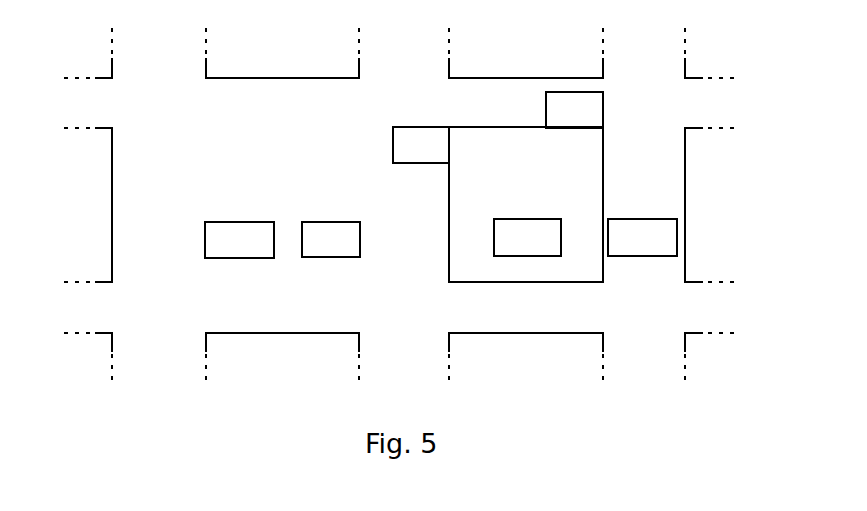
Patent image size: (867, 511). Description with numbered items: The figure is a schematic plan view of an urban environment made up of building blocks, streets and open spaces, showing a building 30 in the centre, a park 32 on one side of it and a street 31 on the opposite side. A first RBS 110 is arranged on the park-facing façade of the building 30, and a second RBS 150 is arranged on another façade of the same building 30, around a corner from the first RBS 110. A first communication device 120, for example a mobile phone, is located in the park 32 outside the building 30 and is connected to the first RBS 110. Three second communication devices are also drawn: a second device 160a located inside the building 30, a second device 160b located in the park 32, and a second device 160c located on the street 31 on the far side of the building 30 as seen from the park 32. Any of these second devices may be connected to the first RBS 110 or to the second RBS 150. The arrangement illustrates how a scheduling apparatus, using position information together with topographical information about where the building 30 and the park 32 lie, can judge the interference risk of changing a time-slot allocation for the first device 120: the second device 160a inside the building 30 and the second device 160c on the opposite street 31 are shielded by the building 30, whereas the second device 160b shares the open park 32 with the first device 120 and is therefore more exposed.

The building 30 is at (486, 159).
The street 31 is at (657, 154).
The park 32 is at (268, 152).
The first RBS 110 is at (442, 159).
The first communication device 120 is at (353, 252).
The second RBS 150 is at (596, 122).
The second device 160a is at (556, 250).
The second device 160b is at (268, 252).
The second device 160c is at (670, 250).